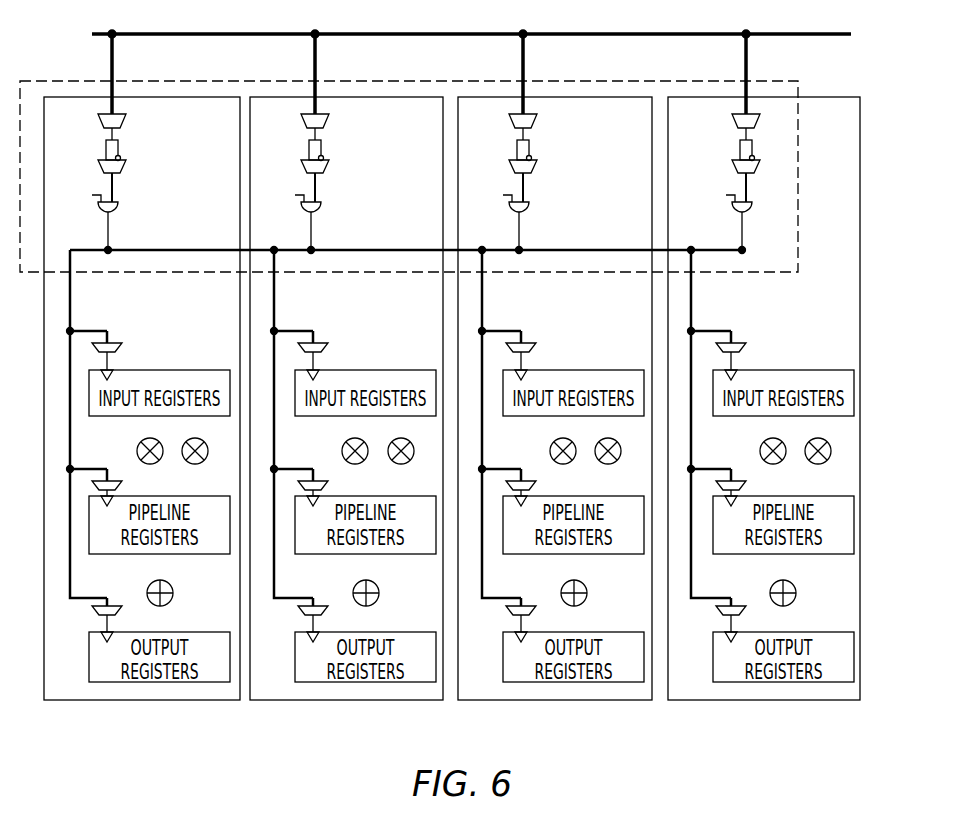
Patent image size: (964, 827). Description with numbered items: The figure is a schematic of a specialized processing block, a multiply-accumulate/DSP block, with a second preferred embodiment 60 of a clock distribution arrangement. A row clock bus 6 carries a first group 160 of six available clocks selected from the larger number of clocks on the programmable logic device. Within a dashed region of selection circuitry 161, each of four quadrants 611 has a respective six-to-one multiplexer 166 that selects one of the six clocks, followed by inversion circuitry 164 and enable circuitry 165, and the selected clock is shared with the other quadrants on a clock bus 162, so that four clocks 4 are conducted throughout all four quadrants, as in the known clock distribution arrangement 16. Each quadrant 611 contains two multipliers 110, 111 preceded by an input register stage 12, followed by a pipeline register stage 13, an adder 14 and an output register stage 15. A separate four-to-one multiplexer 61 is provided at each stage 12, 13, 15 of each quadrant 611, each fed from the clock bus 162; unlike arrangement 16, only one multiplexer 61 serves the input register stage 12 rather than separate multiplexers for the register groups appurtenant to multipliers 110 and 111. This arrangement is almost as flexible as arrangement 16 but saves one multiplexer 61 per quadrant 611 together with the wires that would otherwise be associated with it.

The ROWCLK bus (6 bits) 6 is at (516, 23).
The first group of available clocks 160 is at (792, 32).
The clock distribution arrangement 16 is at (472, 406).
The second preferred embodiment 60 is at (496, 406).
The quadrant 611 is at (205, 700).
The selection circuitry 161 is at (799, 174).
The clock bus 162 is at (406, 237).
The clock bus (4 bits) 4 is at (618, 258).
The 6:1 multiplexer 166 is at (98, 120).
The inversion circuitry 164 is at (98, 166).
The enable circuitry 165 is at (94, 207).
The 4:1 multiplexer 61 is at (93, 347).
The input register stage 12 is at (493, 392).
The pipeline register stage 13 is at (493, 524).
The output register stage 15 is at (493, 655).
The multiplier 110 is at (140, 442).
The multiplier 111 is at (199, 463).
The adder 14 is at (173, 598).